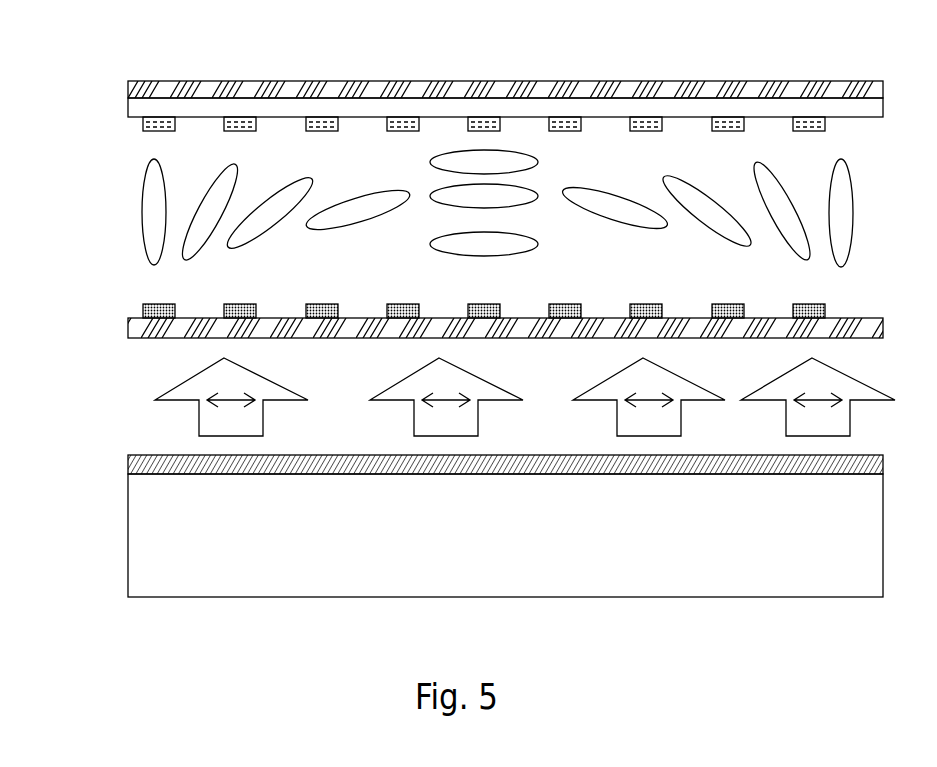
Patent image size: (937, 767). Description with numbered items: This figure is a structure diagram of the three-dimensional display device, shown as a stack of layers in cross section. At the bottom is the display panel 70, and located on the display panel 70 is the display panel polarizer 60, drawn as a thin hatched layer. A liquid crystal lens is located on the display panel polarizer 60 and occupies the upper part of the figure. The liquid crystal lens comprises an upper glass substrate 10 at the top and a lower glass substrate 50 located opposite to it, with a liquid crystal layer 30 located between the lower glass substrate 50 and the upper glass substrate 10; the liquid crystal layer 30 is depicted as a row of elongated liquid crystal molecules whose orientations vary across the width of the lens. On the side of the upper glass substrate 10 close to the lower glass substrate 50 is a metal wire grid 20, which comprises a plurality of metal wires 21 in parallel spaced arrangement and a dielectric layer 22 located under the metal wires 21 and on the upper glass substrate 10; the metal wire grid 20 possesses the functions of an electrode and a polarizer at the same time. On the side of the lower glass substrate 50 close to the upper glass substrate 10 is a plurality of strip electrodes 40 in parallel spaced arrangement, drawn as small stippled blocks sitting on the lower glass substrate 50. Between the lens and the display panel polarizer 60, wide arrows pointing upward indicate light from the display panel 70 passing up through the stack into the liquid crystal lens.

The upper glass substrate 10 is at (165, 88).
The metal wire grid 20 is at (450, 115).
The metal wires 21 is at (143, 125).
The dielectric layer 22 is at (135, 107).
The liquid crystal layer 30 is at (141, 210).
The strip electrodes 40 is at (158, 308).
The lower glass substrate 50 is at (152, 326).
The display panel polarizer 60 is at (145, 460).
The display panel 70 is at (150, 525).